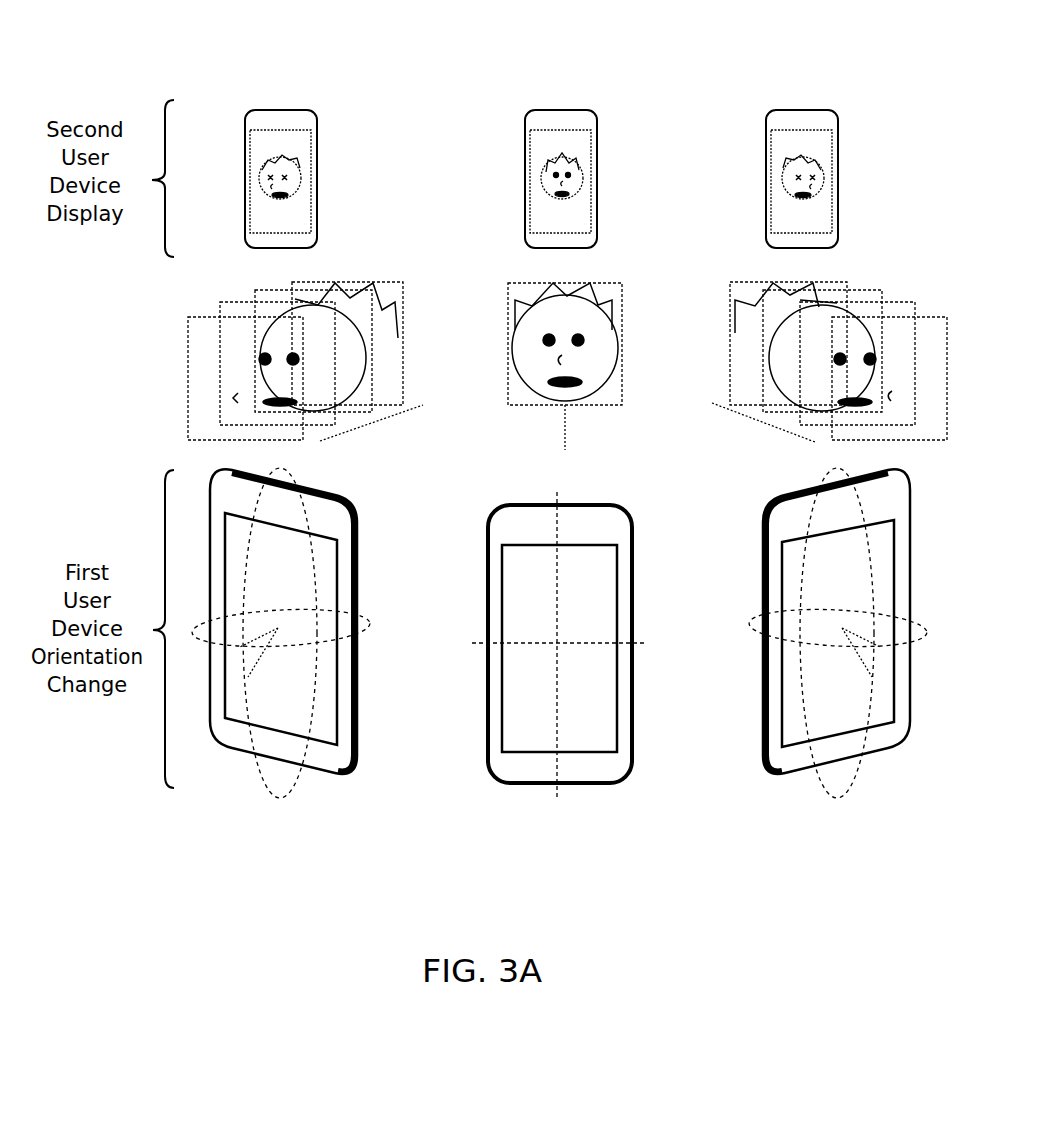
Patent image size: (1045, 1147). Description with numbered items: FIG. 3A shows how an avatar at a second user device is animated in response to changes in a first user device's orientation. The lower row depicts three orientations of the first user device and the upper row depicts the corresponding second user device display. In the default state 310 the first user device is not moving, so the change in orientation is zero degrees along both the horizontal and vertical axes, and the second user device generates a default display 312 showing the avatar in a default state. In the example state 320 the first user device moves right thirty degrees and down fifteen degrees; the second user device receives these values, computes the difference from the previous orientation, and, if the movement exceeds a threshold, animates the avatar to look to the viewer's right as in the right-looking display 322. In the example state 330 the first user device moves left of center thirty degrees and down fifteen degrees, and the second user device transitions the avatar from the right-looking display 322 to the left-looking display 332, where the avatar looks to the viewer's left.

The left-looking display 332 is at (235, 92).
The default display 312 is at (500, 95).
The right-looking display 322 is at (747, 88).
The example state 330 is at (203, 812).
The default state 310 is at (482, 812).
The example state 320 is at (745, 812).